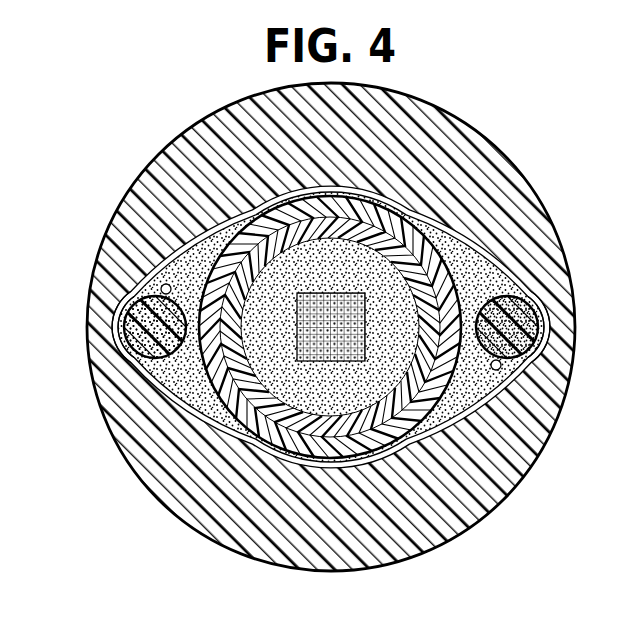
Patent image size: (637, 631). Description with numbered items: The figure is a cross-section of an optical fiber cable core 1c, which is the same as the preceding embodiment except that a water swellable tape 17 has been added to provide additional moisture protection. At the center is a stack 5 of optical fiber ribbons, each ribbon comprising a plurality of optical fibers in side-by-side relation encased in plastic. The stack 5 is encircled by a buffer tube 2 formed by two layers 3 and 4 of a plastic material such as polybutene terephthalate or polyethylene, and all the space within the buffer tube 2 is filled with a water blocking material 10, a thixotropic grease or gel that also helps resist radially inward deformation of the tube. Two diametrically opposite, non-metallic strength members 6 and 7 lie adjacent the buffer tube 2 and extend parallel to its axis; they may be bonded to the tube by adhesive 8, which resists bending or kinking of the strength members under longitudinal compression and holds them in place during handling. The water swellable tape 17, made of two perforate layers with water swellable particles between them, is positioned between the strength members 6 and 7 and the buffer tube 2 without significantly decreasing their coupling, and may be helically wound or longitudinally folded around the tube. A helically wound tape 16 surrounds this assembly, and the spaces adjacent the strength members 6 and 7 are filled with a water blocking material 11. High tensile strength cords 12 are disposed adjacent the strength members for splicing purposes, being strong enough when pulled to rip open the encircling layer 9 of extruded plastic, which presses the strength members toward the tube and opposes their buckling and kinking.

The core 1c is at (492, 135).
The buffer tube 2 is at (368, 470).
The layer 3 is at (380, 217).
The layer 4 is at (423, 240).
The stack of optical fiber ribbons 5 is at (338, 290).
The strength member 6 is at (120, 329).
The strength member 7 is at (527, 328).
The adhesive 8 is at (180, 355).
The layer of extruded plastic 9 is at (240, 547).
The water blocking material 10 is at (292, 400).
The water blocking material 11 is at (198, 272).
The high tensile strength cord 12 is at (161, 287).
The helically wound tape 16 is at (250, 215).
The water swellable tape 17 is at (363, 195).